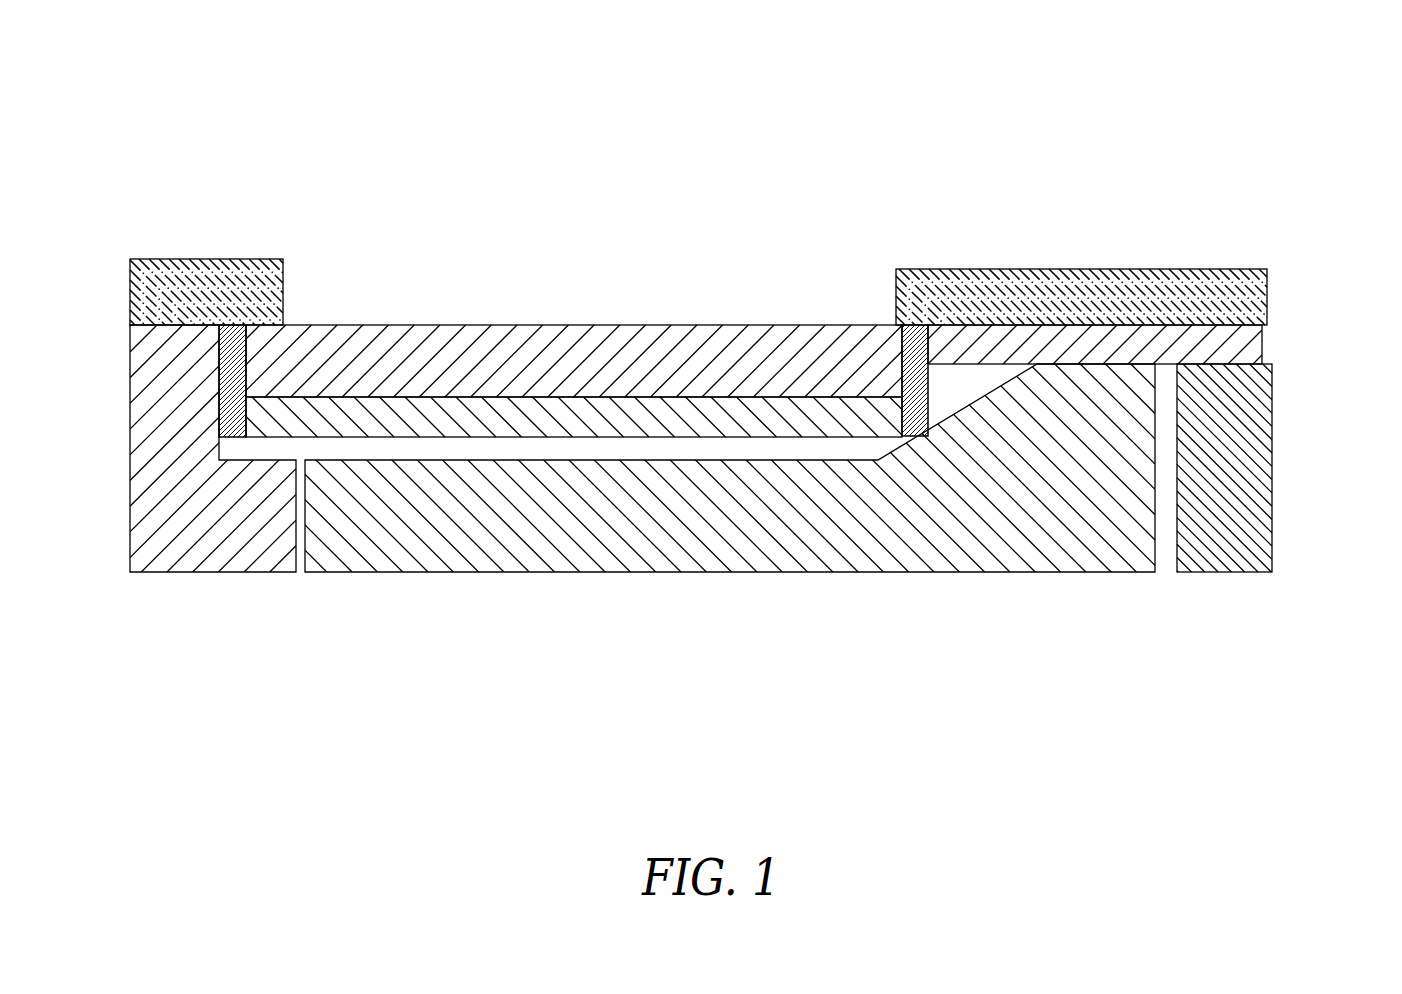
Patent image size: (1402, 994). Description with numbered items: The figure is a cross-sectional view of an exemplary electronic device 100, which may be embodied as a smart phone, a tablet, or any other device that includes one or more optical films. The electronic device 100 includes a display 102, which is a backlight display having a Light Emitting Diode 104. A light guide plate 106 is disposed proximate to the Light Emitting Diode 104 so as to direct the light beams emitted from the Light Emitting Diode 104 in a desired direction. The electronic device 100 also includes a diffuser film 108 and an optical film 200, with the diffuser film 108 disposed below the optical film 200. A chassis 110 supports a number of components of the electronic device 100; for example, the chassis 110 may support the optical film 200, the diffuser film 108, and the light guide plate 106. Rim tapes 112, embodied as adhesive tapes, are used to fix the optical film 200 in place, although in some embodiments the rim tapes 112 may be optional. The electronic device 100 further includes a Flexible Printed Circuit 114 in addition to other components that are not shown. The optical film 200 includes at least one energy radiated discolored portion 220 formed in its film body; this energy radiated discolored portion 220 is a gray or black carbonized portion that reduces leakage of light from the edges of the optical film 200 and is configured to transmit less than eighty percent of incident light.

The electronic device 100 is at (1256, 100).
The display 102 is at (1296, 280).
The Light Emitting Diode (LED) 104 is at (1262, 505).
The light guide plate 106 is at (646, 548).
The diffuser film 108 is at (253, 420).
The chassis 110 is at (215, 537).
The rim tapes 112 is at (130, 290).
The Flexible Printed Circuit (FPC) 114 is at (1252, 343).
The optical film 200 is at (349, 300).
The energy radiated discolored portion 220 is at (230, 382).